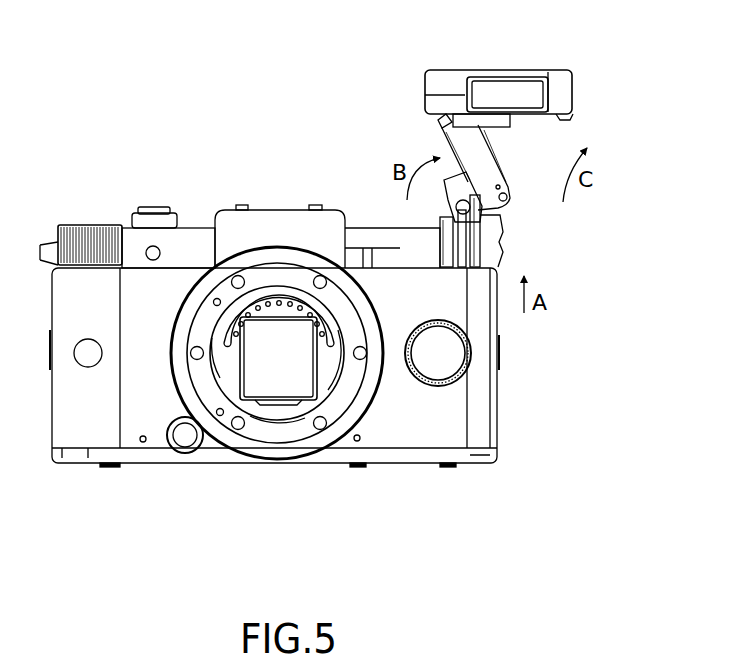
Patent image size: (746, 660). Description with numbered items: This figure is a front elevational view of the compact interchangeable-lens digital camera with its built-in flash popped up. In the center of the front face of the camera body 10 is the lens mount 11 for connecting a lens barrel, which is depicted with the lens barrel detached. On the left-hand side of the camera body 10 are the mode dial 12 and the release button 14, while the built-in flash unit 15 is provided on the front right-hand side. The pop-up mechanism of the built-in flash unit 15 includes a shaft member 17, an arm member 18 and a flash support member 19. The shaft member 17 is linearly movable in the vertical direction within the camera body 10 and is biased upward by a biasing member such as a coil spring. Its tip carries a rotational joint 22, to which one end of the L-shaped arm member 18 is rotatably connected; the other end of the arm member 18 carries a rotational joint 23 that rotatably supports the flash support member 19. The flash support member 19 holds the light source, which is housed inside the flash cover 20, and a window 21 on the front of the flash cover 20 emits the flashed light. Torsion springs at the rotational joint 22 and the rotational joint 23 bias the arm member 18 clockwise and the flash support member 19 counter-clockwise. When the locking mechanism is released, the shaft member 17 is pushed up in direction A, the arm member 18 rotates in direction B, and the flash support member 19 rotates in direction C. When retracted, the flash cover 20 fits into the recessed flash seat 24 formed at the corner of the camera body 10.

The camera body 10 is at (300, 508).
The lens mount 11 is at (258, 432).
The mode dial 12 is at (90, 224).
The release button 14 is at (150, 207).
The built-in flash unit 15 is at (503, 137).
The shaft member 17 is at (498, 224).
The arm member 18 is at (488, 157).
The flash support member 19 is at (578, 118).
The flash cover 20 is at (578, 92).
The window 21 is at (528, 88).
The rotational joint 22 is at (452, 206).
The rotational joint 23 is at (438, 126).
The recessed flash seat 24 is at (372, 234).